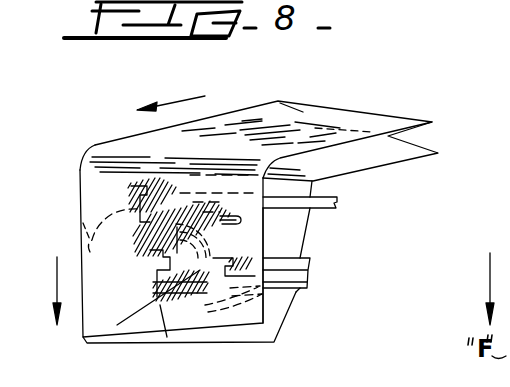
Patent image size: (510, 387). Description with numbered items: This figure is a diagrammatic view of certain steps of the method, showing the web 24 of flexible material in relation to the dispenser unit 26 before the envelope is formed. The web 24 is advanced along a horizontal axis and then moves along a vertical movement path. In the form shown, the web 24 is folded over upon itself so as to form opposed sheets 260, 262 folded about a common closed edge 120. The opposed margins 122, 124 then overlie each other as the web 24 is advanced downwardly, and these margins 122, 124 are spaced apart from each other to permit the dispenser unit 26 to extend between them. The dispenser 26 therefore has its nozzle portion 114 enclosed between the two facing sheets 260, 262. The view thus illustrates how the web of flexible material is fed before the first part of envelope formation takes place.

The web 24 is at (295, 122).
The dispenser unit 26 is at (302, 296).
The outlet nozzle 114 is at (167, 337).
The common closed edge 120 is at (82, 213).
The margin 122 is at (314, 269).
The margin 124 is at (313, 184).
The sheet 260 is at (242, 128).
The sheet 262 is at (405, 157).